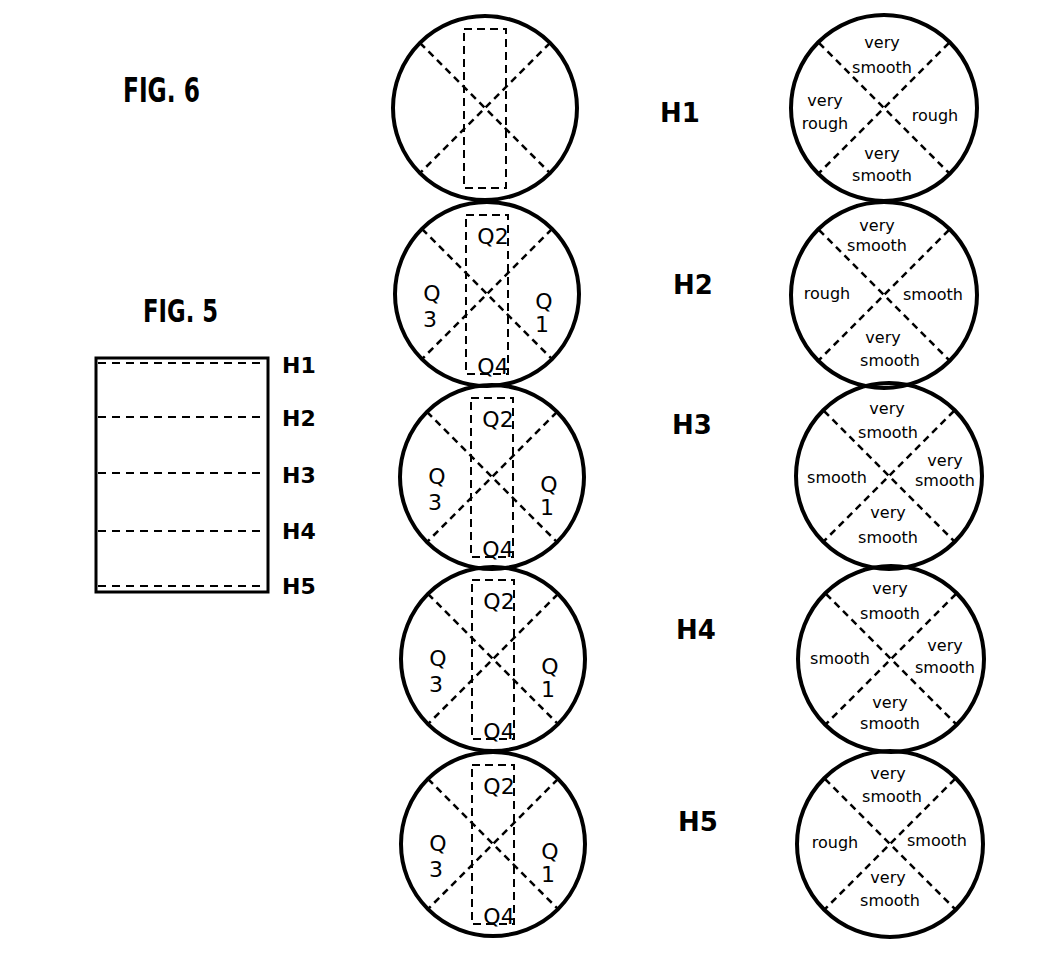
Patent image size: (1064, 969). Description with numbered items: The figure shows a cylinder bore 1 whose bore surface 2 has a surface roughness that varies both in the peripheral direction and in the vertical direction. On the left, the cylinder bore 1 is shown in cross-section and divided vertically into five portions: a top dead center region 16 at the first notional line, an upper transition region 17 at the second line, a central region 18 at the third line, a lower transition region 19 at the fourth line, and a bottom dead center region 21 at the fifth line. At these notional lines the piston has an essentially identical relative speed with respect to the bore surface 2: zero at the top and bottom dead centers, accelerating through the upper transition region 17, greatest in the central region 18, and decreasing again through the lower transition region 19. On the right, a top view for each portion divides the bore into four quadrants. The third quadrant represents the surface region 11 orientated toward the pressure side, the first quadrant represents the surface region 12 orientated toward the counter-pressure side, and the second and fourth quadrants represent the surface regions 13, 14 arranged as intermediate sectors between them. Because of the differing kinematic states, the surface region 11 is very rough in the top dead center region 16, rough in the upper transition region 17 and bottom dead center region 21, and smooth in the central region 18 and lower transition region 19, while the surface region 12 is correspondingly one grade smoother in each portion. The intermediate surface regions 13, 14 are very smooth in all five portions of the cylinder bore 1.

In FIG. 5, the cylinder bore 1 is at (164, 616).
In FIG. 6, the bore surface 2 is at (412, 187).
In FIG. 6, the surface region 11 is at (556, 472).
In FIG. 6, the surface region 12 is at (811, 480).
In FIG. 6, the surface region 13 is at (847, 577).
In FIG. 6, the surface region 14 is at (840, 377).
In FIG. 5, the top dead center region 16 is at (108, 368).
In FIG. 5, the upper transition region 17 is at (108, 412).
In FIG. 5, the central region 18 is at (108, 463).
In FIG. 5, the lower transition region 19 is at (115, 520).
In FIG. 5, the bottom dead center region 21 is at (108, 578).